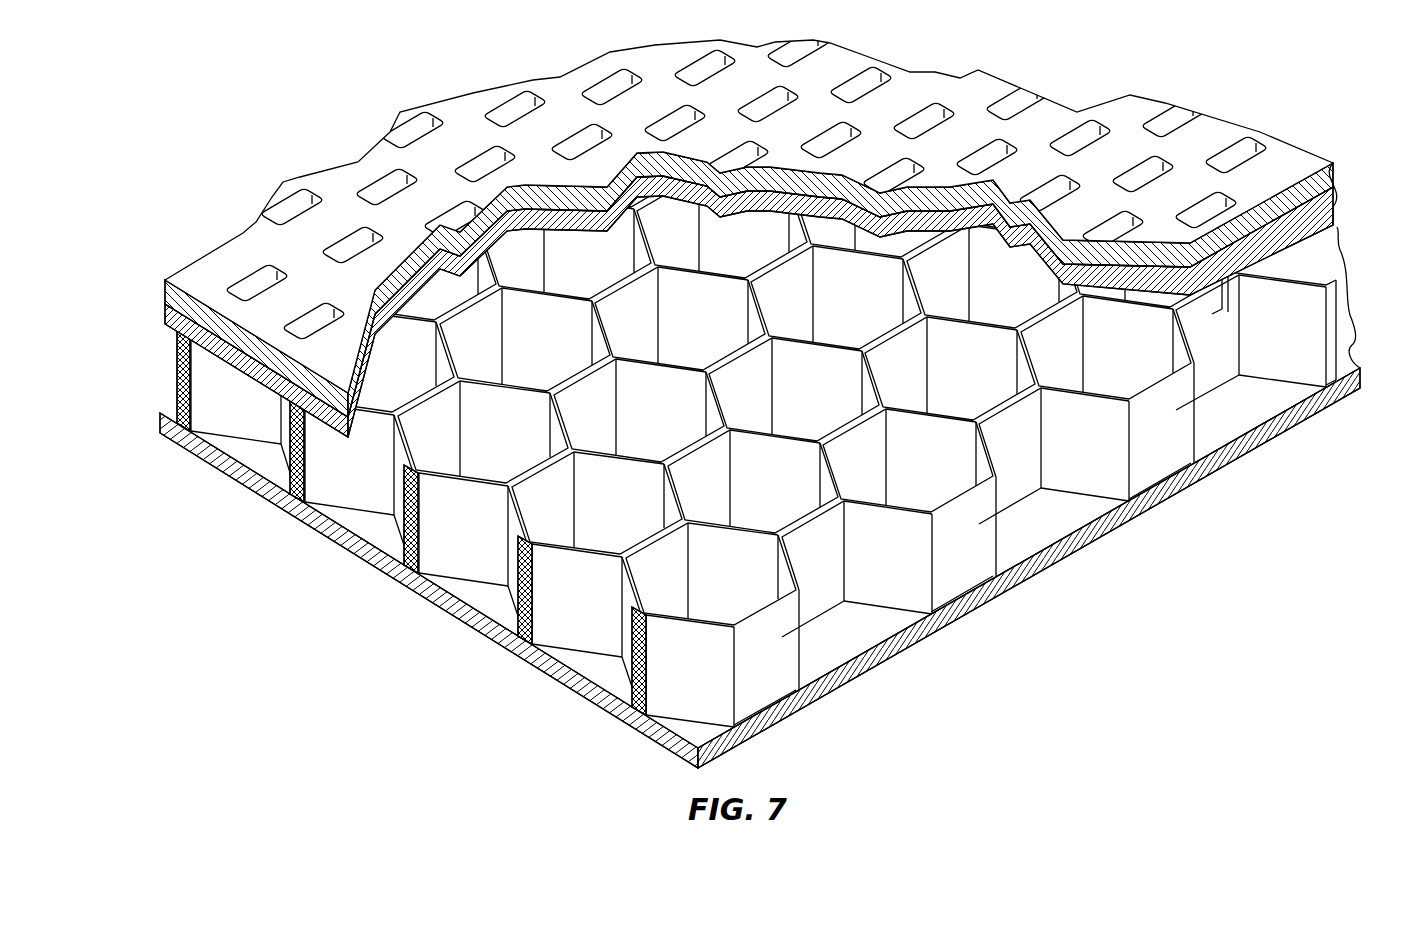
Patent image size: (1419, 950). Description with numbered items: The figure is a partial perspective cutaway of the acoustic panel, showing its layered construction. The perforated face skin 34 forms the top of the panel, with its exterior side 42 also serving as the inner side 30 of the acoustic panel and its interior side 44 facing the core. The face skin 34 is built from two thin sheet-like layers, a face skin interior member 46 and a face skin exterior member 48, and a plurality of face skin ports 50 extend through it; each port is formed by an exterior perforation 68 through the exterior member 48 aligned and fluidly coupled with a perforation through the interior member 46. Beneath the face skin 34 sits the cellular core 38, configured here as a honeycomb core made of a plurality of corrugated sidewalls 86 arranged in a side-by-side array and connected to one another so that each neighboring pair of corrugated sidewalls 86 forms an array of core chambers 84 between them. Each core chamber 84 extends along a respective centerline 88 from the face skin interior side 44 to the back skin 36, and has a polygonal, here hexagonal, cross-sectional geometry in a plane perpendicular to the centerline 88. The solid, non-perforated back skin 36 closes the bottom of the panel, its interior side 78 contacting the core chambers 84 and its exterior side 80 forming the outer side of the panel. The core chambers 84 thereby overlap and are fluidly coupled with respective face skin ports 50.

The inner side 30 is at (1318, 180).
The face skin 34 is at (160, 290).
The back skin 36 is at (170, 428).
The cellular core 38 is at (180, 366).
The exterior side 42 is at (1318, 180).
The interior side 44 is at (1340, 247).
The interior member 46 is at (165, 337).
The exterior member 48 is at (190, 279).
The face skin ports 50 is at (352, 243).
The exterior perforations 68 is at (410, 176).
The interior side 78 is at (1352, 362).
The exterior side 80 is at (1348, 394).
The core chambers 84 is at (760, 396).
The corrugated sidewalls 86 is at (510, 578).
The centerline 88 is at (1143, 372).